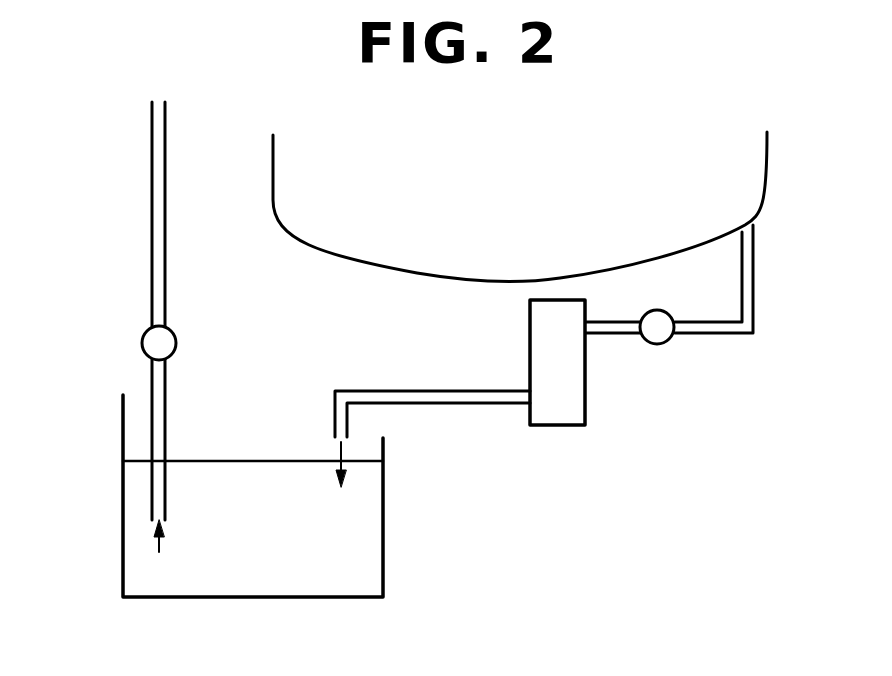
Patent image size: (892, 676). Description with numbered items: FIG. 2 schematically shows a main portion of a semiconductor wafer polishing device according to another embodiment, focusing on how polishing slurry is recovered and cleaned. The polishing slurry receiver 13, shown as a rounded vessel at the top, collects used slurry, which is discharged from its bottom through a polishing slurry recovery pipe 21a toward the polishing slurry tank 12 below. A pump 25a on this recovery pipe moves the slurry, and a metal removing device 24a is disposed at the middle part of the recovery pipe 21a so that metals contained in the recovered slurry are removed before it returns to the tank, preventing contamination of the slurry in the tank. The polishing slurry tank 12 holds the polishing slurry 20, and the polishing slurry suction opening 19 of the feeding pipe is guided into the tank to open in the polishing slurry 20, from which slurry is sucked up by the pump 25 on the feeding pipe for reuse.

The polishing slurry receiver 13 is at (337, 238).
The polishing slurry recovery pipe 21a is at (753, 310).
The pump 25a is at (654, 345).
The metal removing device 24a is at (530, 312).
The polishing slurry tank 12 is at (383, 442).
The polishing slurry 20 is at (353, 553).
The polishing slurry suction opening 19 is at (152, 498).
The pump 25 is at (142, 343).